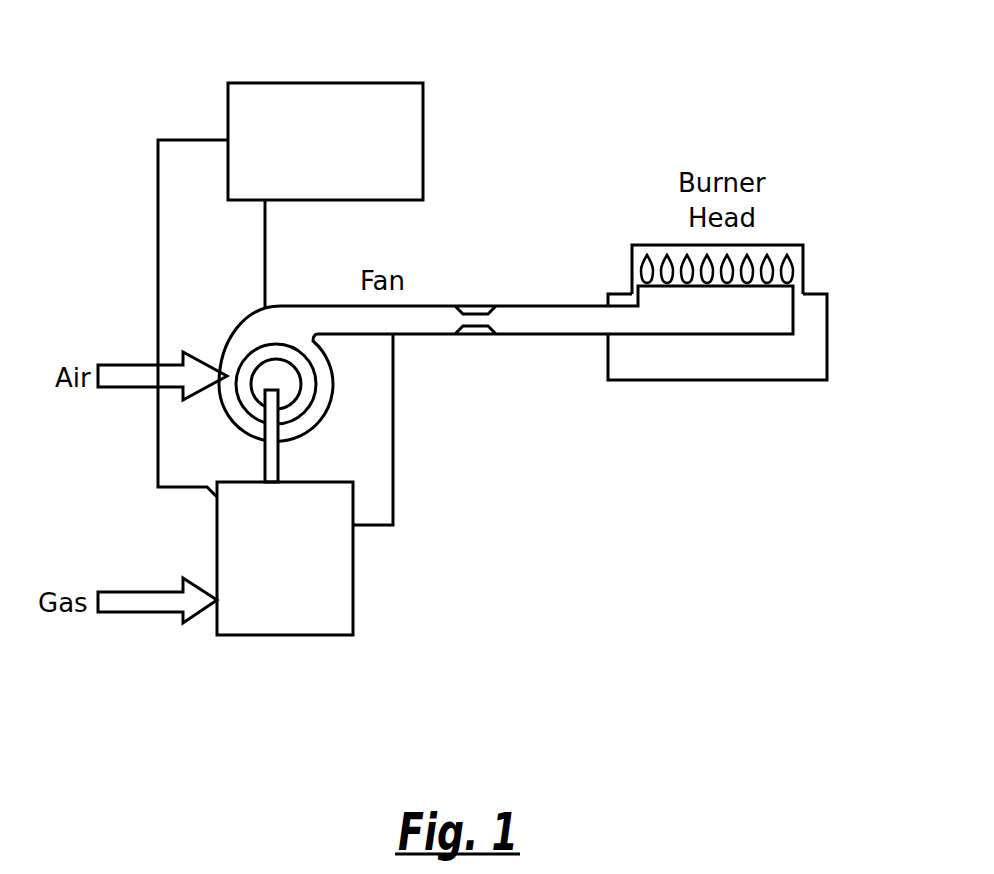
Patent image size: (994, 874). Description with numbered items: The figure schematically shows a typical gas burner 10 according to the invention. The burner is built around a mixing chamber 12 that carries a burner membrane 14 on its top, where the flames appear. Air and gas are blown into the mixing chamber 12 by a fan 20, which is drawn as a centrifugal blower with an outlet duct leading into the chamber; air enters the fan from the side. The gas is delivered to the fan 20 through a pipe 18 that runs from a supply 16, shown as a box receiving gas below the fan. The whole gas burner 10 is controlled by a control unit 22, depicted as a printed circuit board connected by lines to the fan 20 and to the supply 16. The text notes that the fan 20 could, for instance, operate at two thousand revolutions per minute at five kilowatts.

The gas burner 10 is at (717, 428).
The mixing chamber 12 is at (792, 350).
The burner membrane 14 is at (792, 283).
The supply 16 is at (277, 598).
The pipe 18 is at (273, 455).
The fan 20 is at (286, 314).
The control unit 22 is at (358, 103).